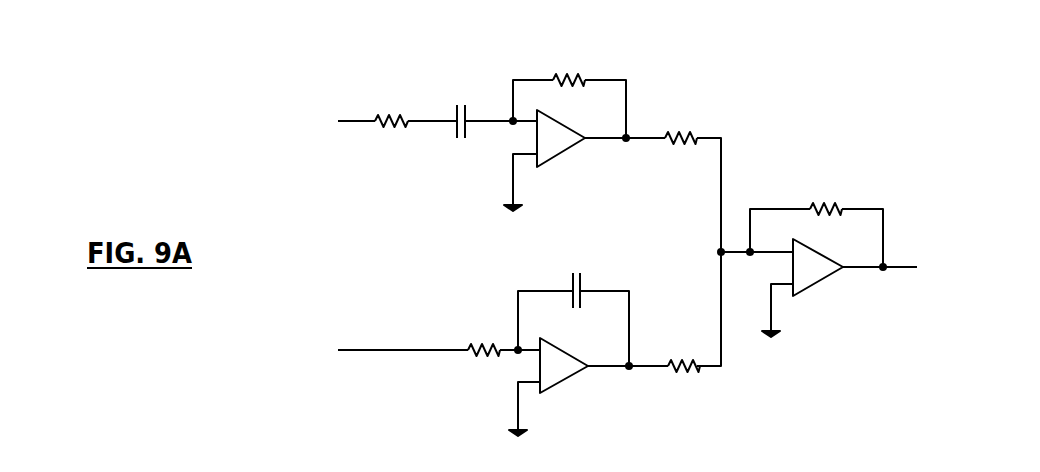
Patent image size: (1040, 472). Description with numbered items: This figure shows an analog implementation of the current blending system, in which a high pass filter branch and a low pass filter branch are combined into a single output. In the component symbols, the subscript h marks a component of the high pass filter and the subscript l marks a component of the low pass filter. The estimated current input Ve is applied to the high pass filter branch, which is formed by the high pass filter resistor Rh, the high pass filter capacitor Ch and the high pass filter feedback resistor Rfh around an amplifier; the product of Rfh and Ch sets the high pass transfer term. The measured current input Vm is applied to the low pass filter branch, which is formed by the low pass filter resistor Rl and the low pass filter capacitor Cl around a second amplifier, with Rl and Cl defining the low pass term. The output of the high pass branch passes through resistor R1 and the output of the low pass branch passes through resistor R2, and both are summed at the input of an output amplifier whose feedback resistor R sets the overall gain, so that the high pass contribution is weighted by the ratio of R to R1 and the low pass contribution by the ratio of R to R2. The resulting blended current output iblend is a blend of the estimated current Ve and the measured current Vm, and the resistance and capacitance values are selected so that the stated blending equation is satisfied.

The estimated current input Ve is at (336, 117).
The high pass filter resistor Rh is at (391, 107).
The high pass filter capacitor Ch is at (461, 110).
The high pass filter feedback resistor Rfh is at (569, 92).
The resistor R1 is at (681, 125).
The measured current input Vm is at (383, 345).
The low pass filter resistor Rl is at (484, 336).
The low pass filter capacitor Cl is at (573, 306).
The resistor R2 is at (684, 351).
The resistor R is at (816, 220).
The blended current output iblend is at (922, 267).